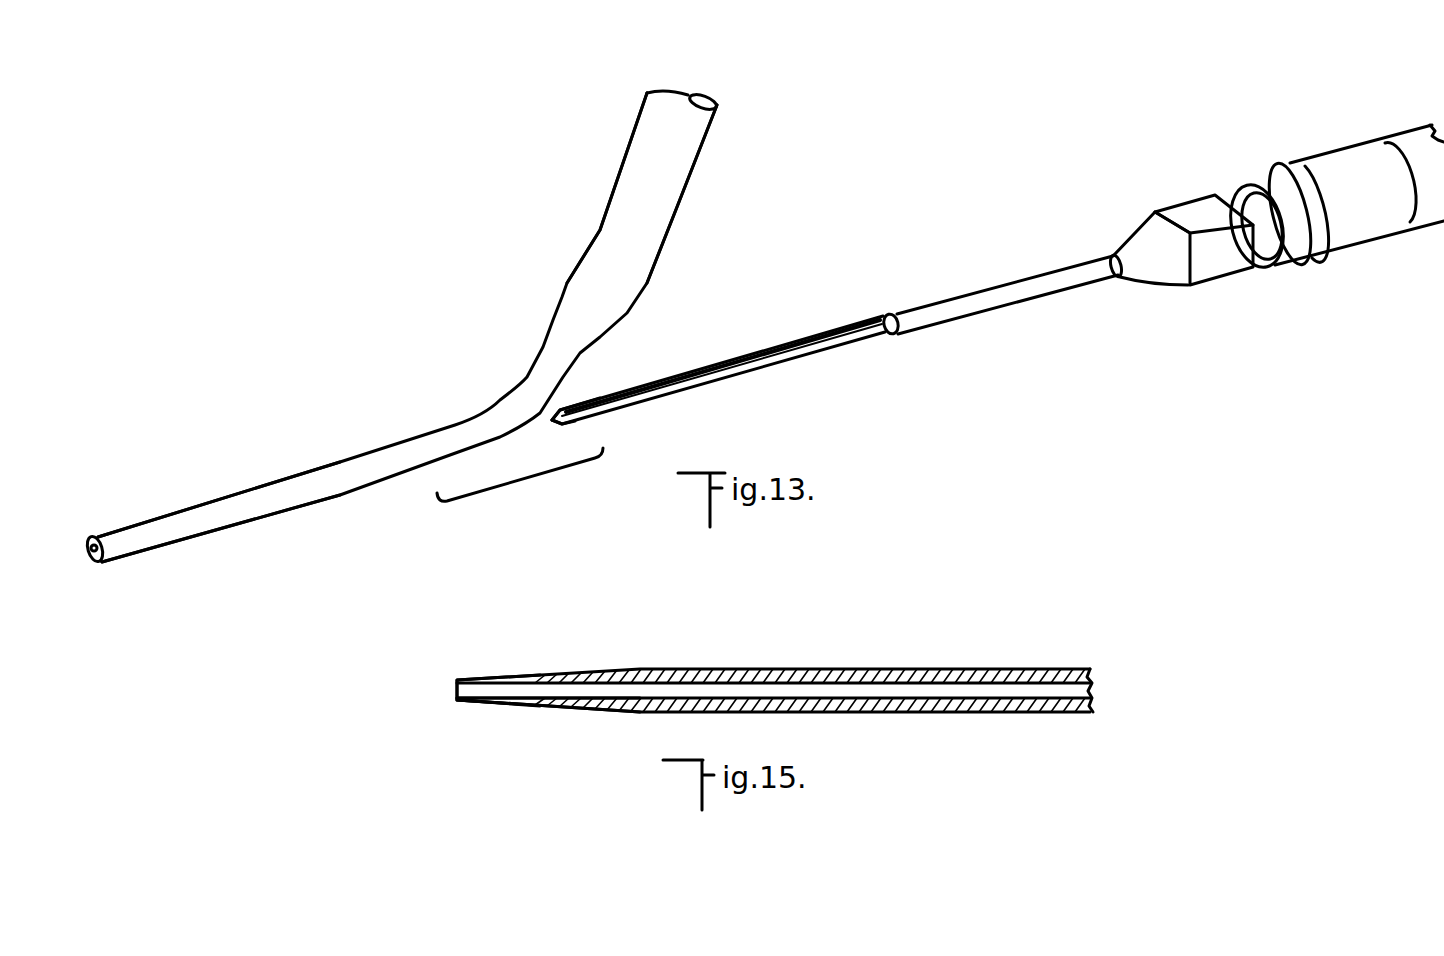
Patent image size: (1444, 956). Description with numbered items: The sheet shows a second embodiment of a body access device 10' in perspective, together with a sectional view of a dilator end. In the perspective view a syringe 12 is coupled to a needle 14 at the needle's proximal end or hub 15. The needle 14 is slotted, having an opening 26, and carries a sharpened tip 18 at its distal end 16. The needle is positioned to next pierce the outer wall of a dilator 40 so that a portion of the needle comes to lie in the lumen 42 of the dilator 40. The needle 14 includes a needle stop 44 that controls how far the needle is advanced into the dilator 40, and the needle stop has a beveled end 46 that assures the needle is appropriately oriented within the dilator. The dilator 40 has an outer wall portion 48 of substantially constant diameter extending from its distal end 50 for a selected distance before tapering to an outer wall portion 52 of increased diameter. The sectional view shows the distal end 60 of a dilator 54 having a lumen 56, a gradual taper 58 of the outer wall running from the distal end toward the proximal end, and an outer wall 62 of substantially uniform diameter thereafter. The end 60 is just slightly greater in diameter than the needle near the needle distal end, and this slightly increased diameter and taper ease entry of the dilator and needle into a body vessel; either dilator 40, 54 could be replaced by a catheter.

In FIG. 13, the body access device 10' is at (350, 203).
In FIG. 13, the syringe 12 is at (1343, 250).
In FIG. 13, the needle 14 is at (777, 360).
In FIG. 13, the hub 15 is at (1210, 280).
In FIG. 13, the distal end 16 is at (566, 408).
In FIG. 13, the sharpened tip 18 is at (550, 421).
In FIG. 13, the opening 26 is at (690, 375).
In FIG. 13, the dilator 40 is at (448, 397).
In FIG. 13, the lumen 42 is at (90, 547).
In FIG. 13, the needle stop 44 is at (1012, 283).
In FIG. 13, the beveled end 46 is at (890, 313).
In FIG. 13, the outer wall portion 48 is at (257, 520).
In FIG. 13, the distal end 50 is at (90, 560).
In FIG. 13, the outer wall portion 52 is at (680, 205).
In FIG. 15, the dilator 54 is at (1048, 738).
In FIG. 15, the lumen 56 is at (762, 688).
In FIG. 15, the tapered portion 58 is at (555, 705).
In FIG. 15, the distal end 60 is at (472, 728).
In FIG. 15, the outer wall 62 is at (955, 670).